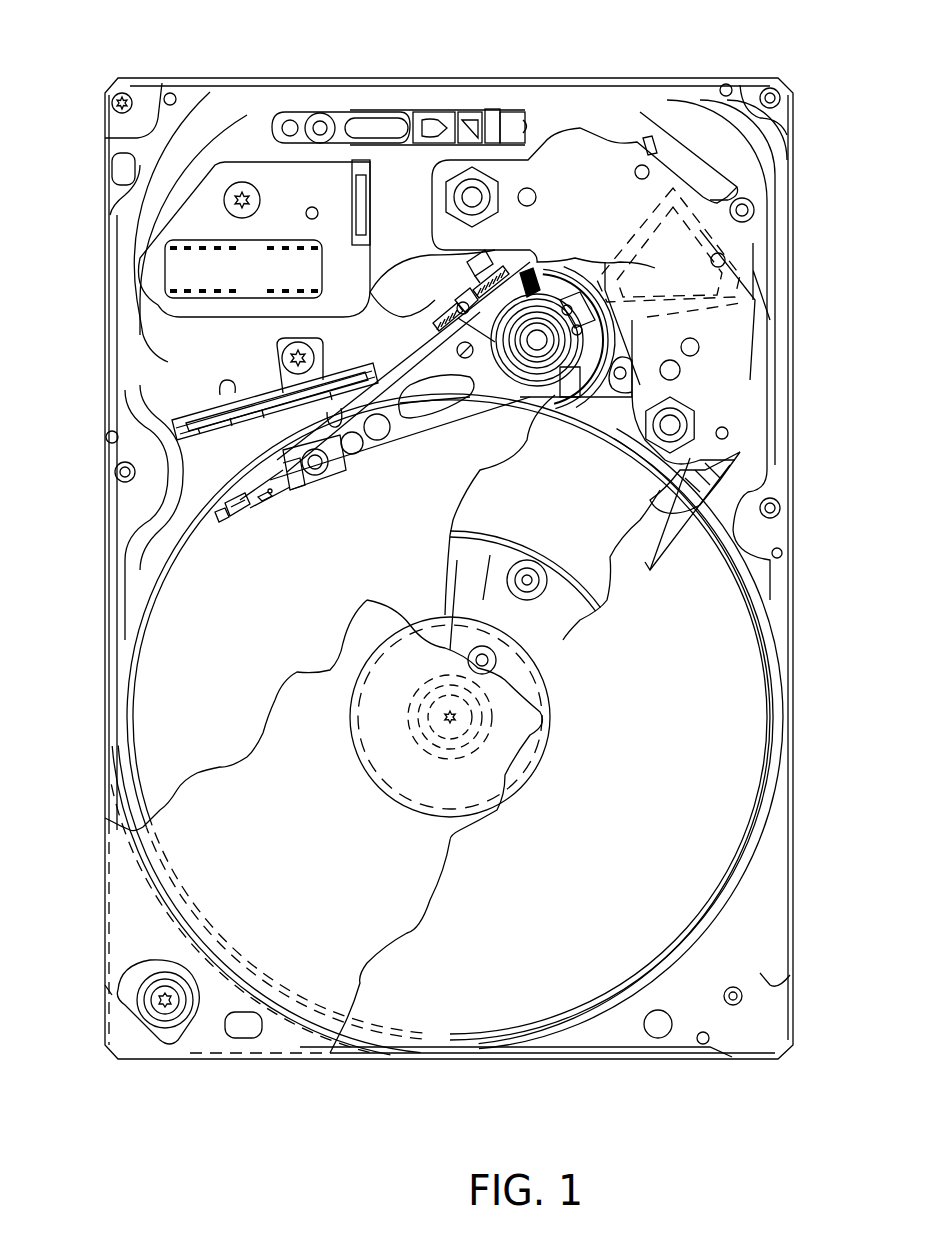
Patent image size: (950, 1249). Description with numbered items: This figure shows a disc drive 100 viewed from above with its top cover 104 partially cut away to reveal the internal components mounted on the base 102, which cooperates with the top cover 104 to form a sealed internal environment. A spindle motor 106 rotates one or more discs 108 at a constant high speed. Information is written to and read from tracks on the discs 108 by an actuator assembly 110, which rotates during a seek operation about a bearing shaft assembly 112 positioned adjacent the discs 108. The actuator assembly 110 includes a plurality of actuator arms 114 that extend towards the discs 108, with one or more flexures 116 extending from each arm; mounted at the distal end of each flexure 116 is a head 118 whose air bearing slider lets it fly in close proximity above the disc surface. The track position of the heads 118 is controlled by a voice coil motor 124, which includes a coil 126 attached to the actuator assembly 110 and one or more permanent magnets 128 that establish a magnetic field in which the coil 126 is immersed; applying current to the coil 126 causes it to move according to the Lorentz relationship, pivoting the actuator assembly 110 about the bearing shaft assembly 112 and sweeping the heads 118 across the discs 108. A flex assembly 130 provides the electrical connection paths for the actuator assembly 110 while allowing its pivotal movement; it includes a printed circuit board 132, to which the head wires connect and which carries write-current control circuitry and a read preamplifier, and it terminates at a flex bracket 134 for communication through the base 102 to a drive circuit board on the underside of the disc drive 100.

The disc drive 100 is at (819, 148).
The base 102 is at (137, 361).
The top cover 104 is at (353, 905).
The spindle motor 106 is at (540, 632).
The discs 108 is at (705, 787).
The actuator assembly 110 is at (368, 485).
The bearing shaft assembly 112 is at (541, 344).
The actuator arms 114 is at (385, 440).
The flexures 116 is at (303, 476).
The head 118 is at (234, 522).
The voice coil motor 124 is at (556, 132).
The coil 126 is at (727, 227).
The permanent magnets 128 is at (530, 185).
The flex assembly 130 is at (385, 295).
The printed circuit board 132 is at (437, 337).
The flex bracket 134 is at (365, 200).